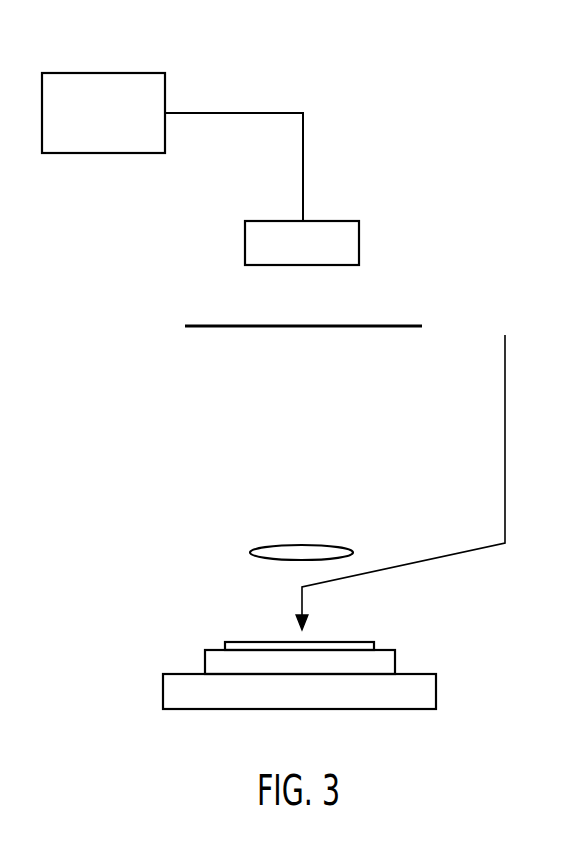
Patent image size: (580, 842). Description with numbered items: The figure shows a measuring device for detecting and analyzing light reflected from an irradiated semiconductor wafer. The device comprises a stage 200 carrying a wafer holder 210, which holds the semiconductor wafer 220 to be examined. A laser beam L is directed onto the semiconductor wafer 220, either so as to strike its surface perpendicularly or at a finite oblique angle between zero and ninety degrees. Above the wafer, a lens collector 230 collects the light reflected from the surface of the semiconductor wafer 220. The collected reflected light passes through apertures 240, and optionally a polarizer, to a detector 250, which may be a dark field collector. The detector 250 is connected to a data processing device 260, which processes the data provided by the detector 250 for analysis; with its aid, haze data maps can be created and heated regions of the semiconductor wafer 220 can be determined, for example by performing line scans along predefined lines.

The data processing device 260 is at (139, 73).
The detector 250 is at (245, 245).
The apertures 240 is at (186, 326).
The laser beam L is at (505, 410).
The lens collector 230 is at (250, 552).
The semiconductor wafer 220 is at (373, 645).
The wafer holder 210 is at (395, 658).
The stage 200 is at (436, 688).